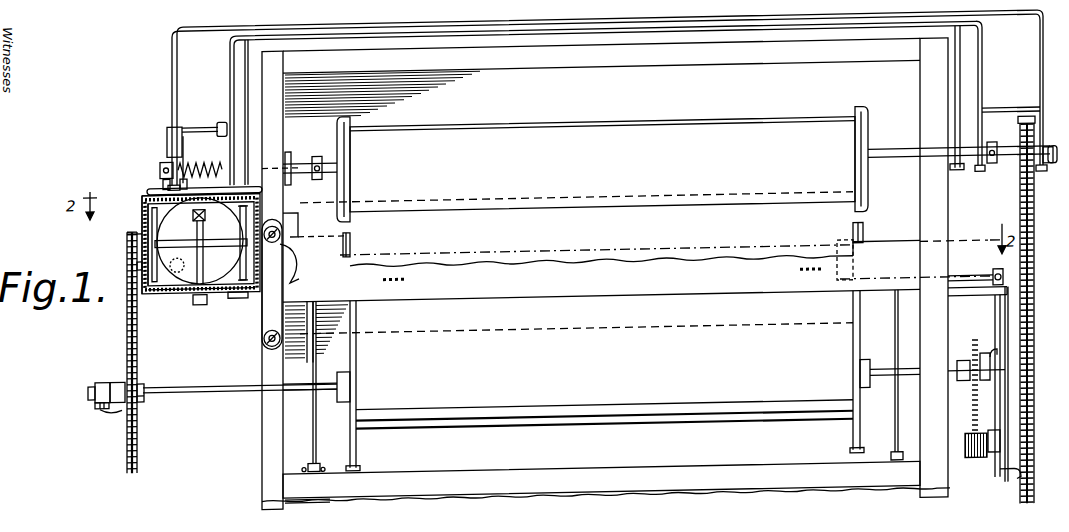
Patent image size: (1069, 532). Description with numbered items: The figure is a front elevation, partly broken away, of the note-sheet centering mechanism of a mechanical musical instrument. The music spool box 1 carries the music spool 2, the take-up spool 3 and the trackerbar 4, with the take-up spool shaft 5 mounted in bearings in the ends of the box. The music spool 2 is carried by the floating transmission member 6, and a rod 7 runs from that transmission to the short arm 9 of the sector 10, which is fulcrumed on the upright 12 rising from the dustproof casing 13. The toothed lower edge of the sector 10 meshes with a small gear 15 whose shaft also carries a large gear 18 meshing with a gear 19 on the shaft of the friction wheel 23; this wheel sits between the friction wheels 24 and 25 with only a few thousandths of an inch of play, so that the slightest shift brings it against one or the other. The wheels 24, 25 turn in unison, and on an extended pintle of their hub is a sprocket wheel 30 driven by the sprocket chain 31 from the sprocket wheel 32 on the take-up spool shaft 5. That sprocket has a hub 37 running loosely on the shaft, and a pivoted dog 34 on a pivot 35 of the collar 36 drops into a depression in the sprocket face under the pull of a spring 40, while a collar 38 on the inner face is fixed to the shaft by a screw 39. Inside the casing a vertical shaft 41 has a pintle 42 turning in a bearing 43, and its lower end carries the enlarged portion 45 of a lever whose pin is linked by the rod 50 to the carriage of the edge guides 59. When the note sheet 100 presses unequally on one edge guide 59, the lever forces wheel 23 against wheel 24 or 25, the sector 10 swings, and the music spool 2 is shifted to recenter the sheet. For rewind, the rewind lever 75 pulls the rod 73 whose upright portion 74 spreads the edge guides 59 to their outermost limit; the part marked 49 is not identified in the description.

The music spool box 1 is at (606, 274).
The music spool 2 is at (659, 163).
The take-up spool 3 is at (601, 380).
The trackerbar 4 is at (645, 301).
The take-up spool shaft 5 is at (240, 375).
The floating transmission member 6 is at (607, 103).
The rod 7 is at (204, 112).
The short arm 9 is at (163, 152).
The sector 10 is at (188, 184).
The upright 12 is at (191, 159).
The dustproof casing 13 is at (201, 259).
The small gear 15 is at (117, 259).
The large gear 18 is at (145, 265).
The gear 19 is at (209, 246).
The friction wheel 23 is at (238, 248).
The friction wheel 24 is at (284, 283).
The friction wheel 25 is at (163, 217).
The sprocket wheel 30 is at (117, 235).
The sprocket chain 31 is at (107, 353).
The sprocket wheel 32 is at (112, 353).
The dog 34 is at (95, 419).
The pivot 35 is at (79, 403).
The collar 36 is at (99, 376).
The hub 37 is at (116, 375).
The collar 38 is at (154, 378).
The screw 39 is at (156, 402).
The spring 40 is at (72, 389).
The vertical shaft 41 is at (198, 266).
The pintle 42 is at (201, 229).
The bearing 43 is at (314, 218).
The enlarged portion 45 is at (201, 310).
The casing side 49 is at (128, 245).
The rod 50 is at (238, 308).
The edge guides 59 is at (603, 239).
The rod 73 is at (970, 264).
The upright portion 74 is at (863, 259).
The rewind lever 75 is at (947, 278).
The note sheet 100 is at (601, 273).